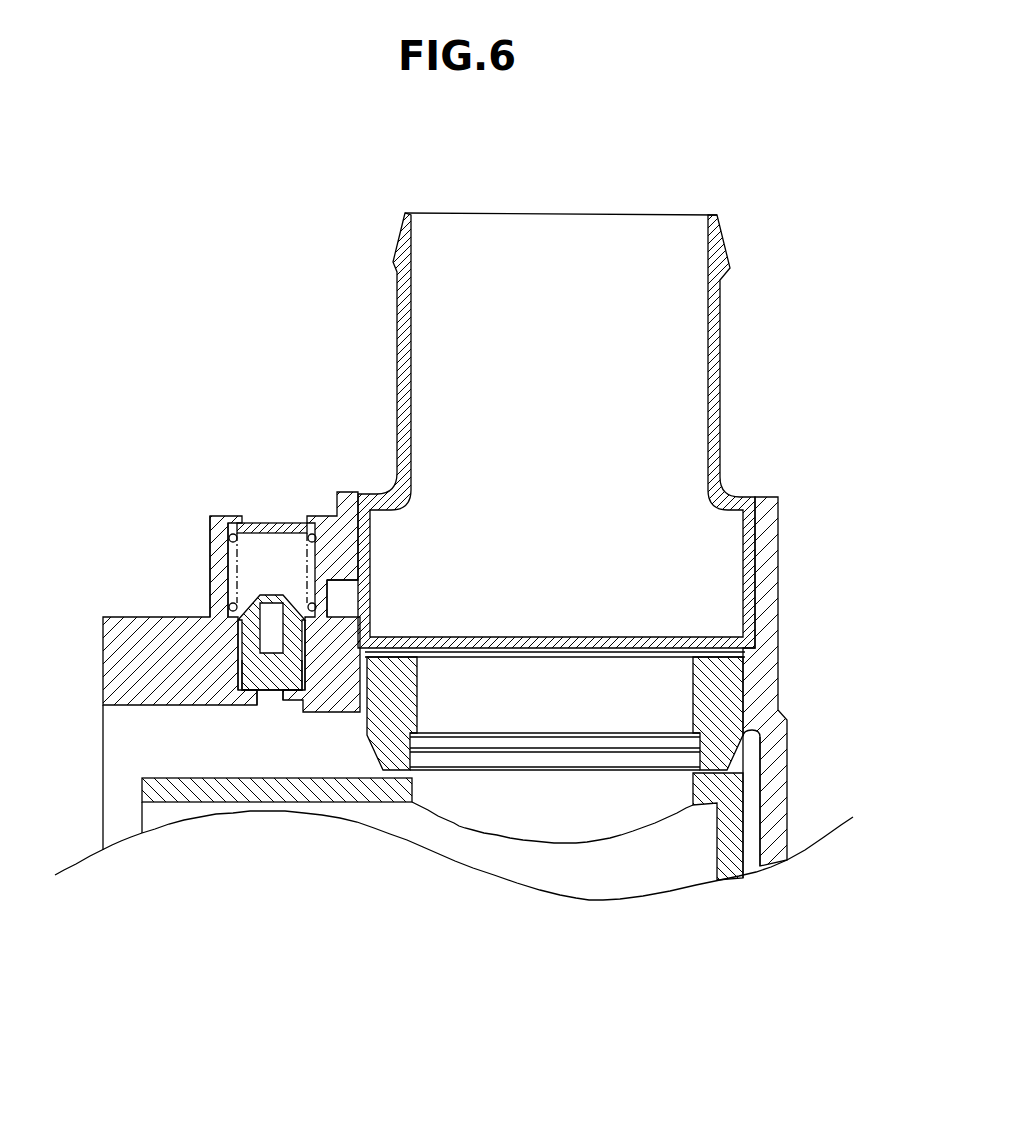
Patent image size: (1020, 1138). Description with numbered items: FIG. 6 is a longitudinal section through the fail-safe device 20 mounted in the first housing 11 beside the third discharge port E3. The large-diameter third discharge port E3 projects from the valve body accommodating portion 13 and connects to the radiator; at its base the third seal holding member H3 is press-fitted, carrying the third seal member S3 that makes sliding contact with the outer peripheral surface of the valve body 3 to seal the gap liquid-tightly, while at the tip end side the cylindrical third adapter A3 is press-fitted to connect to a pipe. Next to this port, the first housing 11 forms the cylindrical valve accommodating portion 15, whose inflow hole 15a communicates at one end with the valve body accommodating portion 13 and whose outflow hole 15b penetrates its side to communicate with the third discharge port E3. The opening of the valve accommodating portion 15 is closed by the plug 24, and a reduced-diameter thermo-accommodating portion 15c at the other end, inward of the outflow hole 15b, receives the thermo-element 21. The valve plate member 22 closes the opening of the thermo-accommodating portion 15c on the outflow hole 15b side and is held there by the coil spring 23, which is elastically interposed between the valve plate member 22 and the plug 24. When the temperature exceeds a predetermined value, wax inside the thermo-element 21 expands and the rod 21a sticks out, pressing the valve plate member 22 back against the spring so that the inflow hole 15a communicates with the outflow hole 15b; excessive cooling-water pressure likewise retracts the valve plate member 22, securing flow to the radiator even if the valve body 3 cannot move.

The third adapter A3 is at (740, 300).
The first housing 11 is at (788, 717).
The valve body 3 is at (745, 820).
The third seal member S3 is at (420, 705).
The third seal holding member H3 is at (415, 657).
The third discharge port E3 is at (587, 745).
The valve body accommodating portion 13 is at (135, 704).
The valve accommodating portion 15 is at (220, 560).
The inflow hole 15a is at (272, 702).
The outflow hole 15b is at (365, 600).
The thermo-accommodating portion 15c is at (297, 667).
The fail-safe device 20 is at (211, 498).
The plug 24 is at (268, 520).
The coil spring 23 is at (228, 537).
The valve plate member 22 is at (225, 614).
The thermo-element 21 is at (263, 680).
The rod 21a is at (237, 677).